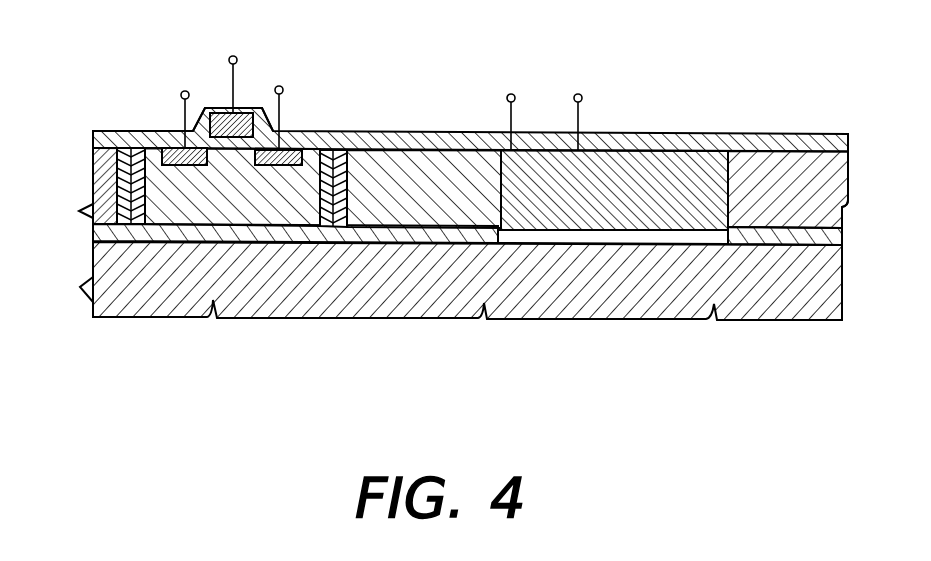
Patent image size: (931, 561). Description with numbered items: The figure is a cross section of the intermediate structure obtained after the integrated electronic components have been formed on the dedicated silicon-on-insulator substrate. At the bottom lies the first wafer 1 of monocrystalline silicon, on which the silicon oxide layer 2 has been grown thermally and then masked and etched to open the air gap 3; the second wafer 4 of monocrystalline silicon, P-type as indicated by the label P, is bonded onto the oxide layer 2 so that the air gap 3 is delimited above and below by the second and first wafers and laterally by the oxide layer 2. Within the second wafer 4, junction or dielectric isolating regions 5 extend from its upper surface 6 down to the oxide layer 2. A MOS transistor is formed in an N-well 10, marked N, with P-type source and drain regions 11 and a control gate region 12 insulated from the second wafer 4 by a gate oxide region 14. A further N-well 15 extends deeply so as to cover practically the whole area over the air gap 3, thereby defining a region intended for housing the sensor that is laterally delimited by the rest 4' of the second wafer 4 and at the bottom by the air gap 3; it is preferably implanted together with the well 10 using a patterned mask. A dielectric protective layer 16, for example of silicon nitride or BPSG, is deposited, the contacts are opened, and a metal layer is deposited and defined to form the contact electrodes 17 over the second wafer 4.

The first wafer 1 is at (112, 300).
The silicon oxide layer 2 is at (100, 229).
The air gap 3 is at (690, 228).
The second wafer 4 is at (867, 189).
The rest of second wafer 4' is at (597, 152).
The isolating regions 5 is at (124, 131).
The upper surface 6 is at (425, 141).
The N-well 10 is at (125, 190).
The source and drain regions 11 is at (172, 148).
The control gate region 12 is at (216, 110).
The gate oxide region 14 is at (247, 118).
The N-well 15 is at (610, 183).
The dielectric protective layer 16 is at (689, 236).
The contact electrodes 17 is at (185, 91).
The N-type conductivity N is at (74, 146).
The P-type conductivity P is at (141, 80).